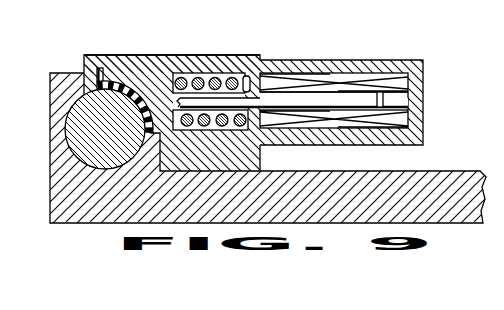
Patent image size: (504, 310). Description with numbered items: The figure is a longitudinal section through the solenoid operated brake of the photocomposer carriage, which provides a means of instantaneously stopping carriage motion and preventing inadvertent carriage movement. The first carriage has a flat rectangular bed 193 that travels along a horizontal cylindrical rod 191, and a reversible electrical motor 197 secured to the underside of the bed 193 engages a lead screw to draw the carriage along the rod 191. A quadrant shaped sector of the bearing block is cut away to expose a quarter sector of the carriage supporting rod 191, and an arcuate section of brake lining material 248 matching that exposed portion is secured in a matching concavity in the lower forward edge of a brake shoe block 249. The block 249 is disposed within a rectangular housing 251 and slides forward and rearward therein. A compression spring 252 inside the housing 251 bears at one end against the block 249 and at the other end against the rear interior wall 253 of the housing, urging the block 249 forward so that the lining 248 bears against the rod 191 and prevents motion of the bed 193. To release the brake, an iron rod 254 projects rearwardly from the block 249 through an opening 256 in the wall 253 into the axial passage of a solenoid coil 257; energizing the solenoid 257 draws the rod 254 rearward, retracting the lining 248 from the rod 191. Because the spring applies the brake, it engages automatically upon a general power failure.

The horizontal cylindrical rod 191 is at (112, 152).
The bed 193 is at (306, 209).
The reversible electrical motor 197 is at (50, 72).
The brake lining material 248 is at (113, 86).
The brake shoe block 249 is at (151, 77).
The rectangular housing 251 is at (200, 55).
The compression spring 252 is at (218, 79).
The rear interior wall 253 is at (291, 73).
The iron rod 254 is at (343, 100).
The opening 256 is at (247, 88).
The solenoid coil 257 is at (334, 127).